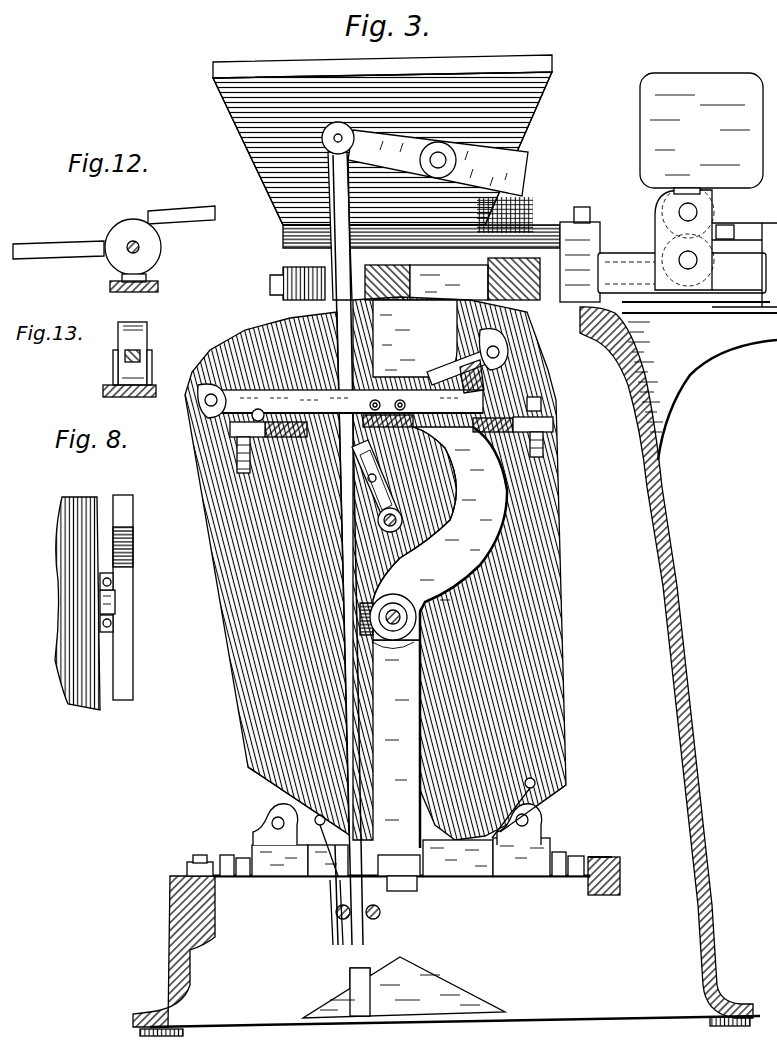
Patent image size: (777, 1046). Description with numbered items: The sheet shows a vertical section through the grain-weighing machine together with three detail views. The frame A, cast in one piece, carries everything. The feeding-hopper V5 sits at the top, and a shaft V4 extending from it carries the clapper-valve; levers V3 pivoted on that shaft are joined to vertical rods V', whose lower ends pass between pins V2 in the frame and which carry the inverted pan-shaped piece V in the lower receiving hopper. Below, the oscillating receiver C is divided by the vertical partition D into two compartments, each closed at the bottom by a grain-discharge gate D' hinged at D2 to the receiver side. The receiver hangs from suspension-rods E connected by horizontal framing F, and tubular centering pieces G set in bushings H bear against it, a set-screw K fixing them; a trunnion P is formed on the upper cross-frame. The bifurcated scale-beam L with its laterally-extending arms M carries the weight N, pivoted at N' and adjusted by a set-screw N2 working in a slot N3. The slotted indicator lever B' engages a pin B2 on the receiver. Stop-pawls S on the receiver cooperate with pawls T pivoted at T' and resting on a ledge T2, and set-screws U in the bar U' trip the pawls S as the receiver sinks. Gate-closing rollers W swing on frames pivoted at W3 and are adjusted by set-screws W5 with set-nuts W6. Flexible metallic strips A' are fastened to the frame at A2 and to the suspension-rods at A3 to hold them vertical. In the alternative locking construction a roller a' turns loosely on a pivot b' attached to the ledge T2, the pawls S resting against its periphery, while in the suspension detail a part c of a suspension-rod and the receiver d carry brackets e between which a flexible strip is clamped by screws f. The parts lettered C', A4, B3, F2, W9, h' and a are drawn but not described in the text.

In FIG. 3, the frame A is at (455, 669).
In FIG. 3, the flexible metallic strips A' is at (401, 864).
In FIG. 3, the strip fastening points on frame A2 is at (607, 871).
In FIG. 3, the strip fastening point on suspension-rod A3 is at (406, 879).
In FIG. 3, the lug A4 is at (187, 868).
In FIG. 3, the slotted lever B' is at (380, 481).
In FIG. 3, the pin B2 is at (380, 484).
In FIG. 3, the arm B3 is at (230, 428).
In FIG. 3, the oscillating receiver C is at (375, 568).
In FIG. 3, the casing wall C' is at (275, 461).
In FIG. 3, the partition D is at (328, 912).
In FIG. 3, the grain-discharge gates D' is at (509, 848).
In FIG. 3, the gate hinges D2 is at (318, 815).
In FIG. 3, the suspension-rods E is at (440, 637).
In FIG. 3, the horizontal framing F is at (576, 254).
In FIG. 3, the guide block F2 is at (297, 283).
In FIG. 3, the tubular pieces G is at (400, 608).
In FIG. 3, the bushings H is at (388, 621).
In FIG. 3, the set-screw K is at (350, 628).
In FIG. 3, the scale-beam L is at (682, 273).
In FIG. 3, the laterally-extending arms M is at (514, 279).
In FIG. 3, the weight N is at (701, 133).
In FIG. 3, the weight pivot N' is at (696, 259).
In FIG. 3, the set-screw N2 is at (679, 211).
In FIG. 3, the slot N3 is at (658, 222).
In FIG. 3, the trunnion P is at (353, 371).
In FIG. 3, the pawls T is at (352, 402).
In FIG. 3, the pawl pivots T' is at (461, 375).
In FIG. 3, the ledge T2 is at (383, 439).
In FIG. 12, the ledge T2 is at (142, 287).
In FIG. 13, the ledge T2 is at (138, 388).
In FIG. 3, the set-screws U is at (409, 412).
In FIG. 3, the bar U' is at (543, 427).
In FIG. 3, the inverted pan-shaped piece V is at (404, 987).
In FIG. 3, the vertical rods V' is at (367, 974).
In FIG. 3, the pins V2 is at (366, 926).
In FIG. 3, the levers V3 is at (425, 211).
In FIG. 3, the shaft V4 is at (438, 160).
In FIG. 3, the feeding-hopper V5 is at (386, 151).
In FIG. 3, the gate-closing rollers W is at (397, 874).
In FIG. 3, the swinging-frame pivot W3 is at (537, 802).
In FIG. 3, the set-screws W5 is at (588, 840).
In FIG. 3, the set-nuts W6 is at (578, 816).
In FIG. 3, the pin W9 is at (272, 823).
In FIG. 3, the hole h' is at (298, 889).
In FIG. 12, the stop-pawls S is at (114, 224).
In FIG. 12, the disk a is at (133, 250).
In FIG. 13, the roller a' is at (132, 346).
In FIG. 12, the pivot b' is at (112, 260).
In FIG. 13, the pivot b' is at (149, 342).
In FIG. 8, the suspension-rod part c is at (120, 597).
In FIG. 8, the receiver d is at (77, 603).
In FIG. 8, the brackets e is at (105, 603).
In FIG. 8, the screws f is at (110, 582).